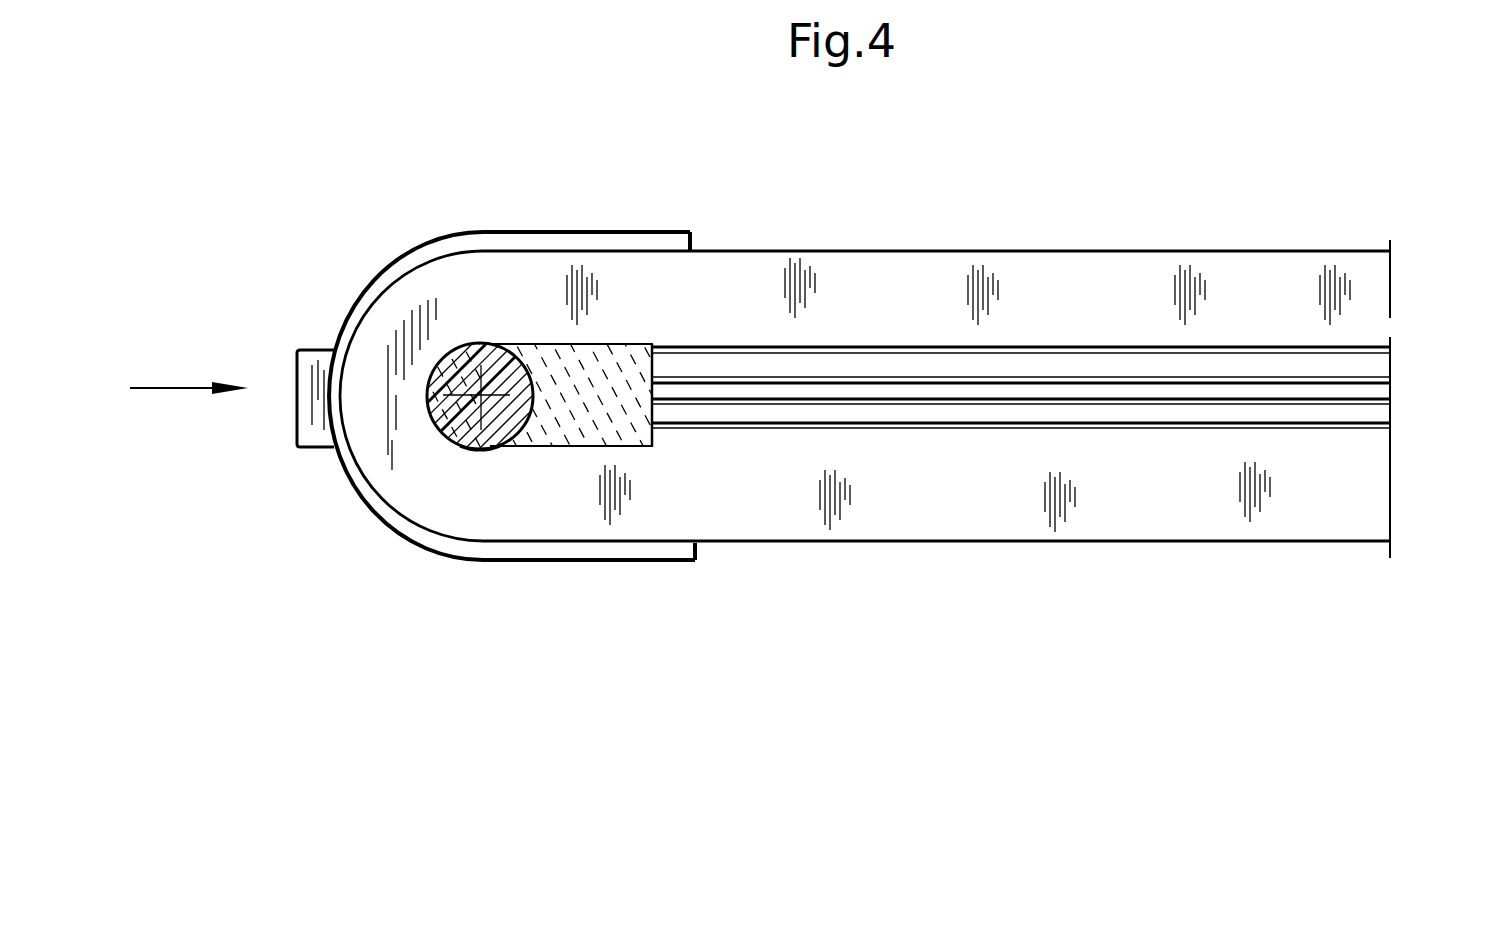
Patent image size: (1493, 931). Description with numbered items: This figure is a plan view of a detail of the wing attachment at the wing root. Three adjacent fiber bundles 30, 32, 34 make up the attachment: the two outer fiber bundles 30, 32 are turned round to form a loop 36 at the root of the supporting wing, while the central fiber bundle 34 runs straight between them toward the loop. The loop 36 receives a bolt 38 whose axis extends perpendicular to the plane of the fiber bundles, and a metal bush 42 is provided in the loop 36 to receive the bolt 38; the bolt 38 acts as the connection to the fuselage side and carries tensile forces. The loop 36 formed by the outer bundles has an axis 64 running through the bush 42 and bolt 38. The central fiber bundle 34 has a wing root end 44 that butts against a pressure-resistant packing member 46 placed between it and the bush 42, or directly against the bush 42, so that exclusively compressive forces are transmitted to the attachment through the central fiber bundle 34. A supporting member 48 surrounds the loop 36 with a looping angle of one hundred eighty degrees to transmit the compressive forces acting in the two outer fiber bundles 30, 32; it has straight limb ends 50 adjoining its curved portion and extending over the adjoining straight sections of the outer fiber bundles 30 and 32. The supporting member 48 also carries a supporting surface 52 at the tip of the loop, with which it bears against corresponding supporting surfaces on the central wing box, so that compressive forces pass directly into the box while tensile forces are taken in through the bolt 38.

The outer fiber bundle 30 is at (1248, 293).
The outer fiber bundle 32 is at (1382, 397).
The central fiber bundle 34 is at (1166, 525).
The loop 36 is at (433, 300).
The bolt 38 is at (457, 428).
The metal bush 42 is at (477, 450).
The wing root end 44 is at (653, 415).
The pressure-resistant packing member 46 is at (582, 423).
The supporting member 48 is at (465, 226).
The straight limb ends 50 is at (652, 242).
The supporting surface 52 is at (295, 373).
The axis 64 is at (483, 392).